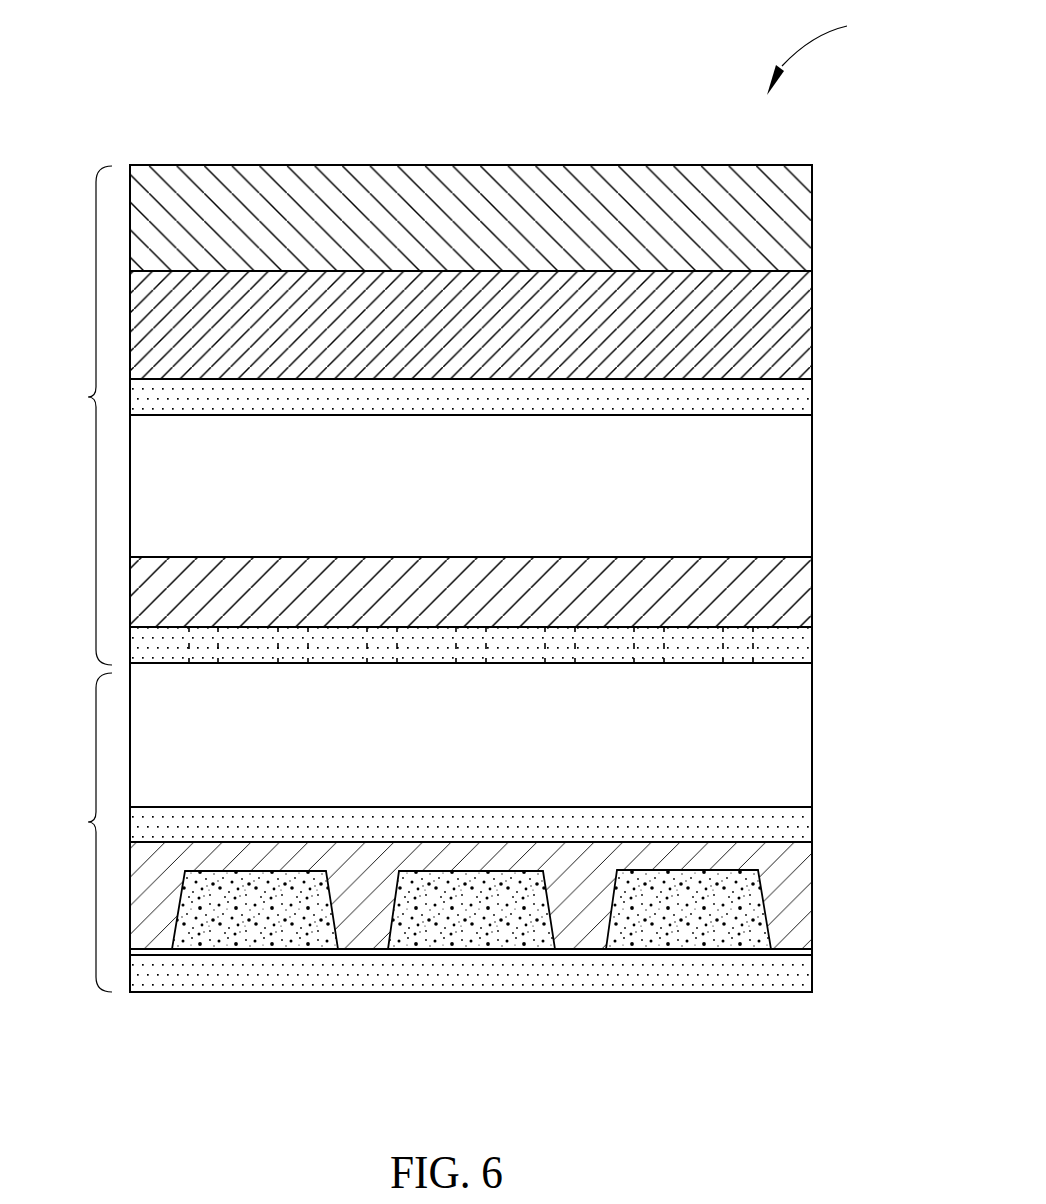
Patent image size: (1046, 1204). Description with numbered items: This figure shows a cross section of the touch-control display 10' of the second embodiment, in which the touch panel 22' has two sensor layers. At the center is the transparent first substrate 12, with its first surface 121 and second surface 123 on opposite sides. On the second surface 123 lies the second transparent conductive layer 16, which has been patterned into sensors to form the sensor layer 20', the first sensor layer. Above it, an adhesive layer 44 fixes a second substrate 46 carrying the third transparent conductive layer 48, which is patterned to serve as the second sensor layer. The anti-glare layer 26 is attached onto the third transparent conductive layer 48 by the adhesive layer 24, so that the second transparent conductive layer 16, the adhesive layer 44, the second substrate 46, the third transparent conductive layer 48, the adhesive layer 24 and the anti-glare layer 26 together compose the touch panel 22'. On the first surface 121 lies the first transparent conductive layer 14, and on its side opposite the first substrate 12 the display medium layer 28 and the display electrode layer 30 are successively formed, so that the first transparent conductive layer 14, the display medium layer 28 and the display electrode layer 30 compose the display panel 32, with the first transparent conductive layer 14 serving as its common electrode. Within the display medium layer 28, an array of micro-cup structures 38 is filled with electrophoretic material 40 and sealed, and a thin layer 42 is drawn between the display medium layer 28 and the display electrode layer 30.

The touch-control display 10' is at (828, 51).
The first substrate 12 is at (798, 733).
The first surface 121 is at (793, 807).
The second surface 123 is at (793, 664).
The first transparent conductive layer 14 is at (798, 823).
The second transparent conductive layer 16 is at (798, 647).
The sensor layer 20' is at (506, 620).
The touch panel 22' is at (72, 415).
The adhesive layer 24 is at (798, 325).
The anti-glare layer 26 is at (798, 218).
The display medium layer 28 is at (798, 893).
The display electrode layer 30 is at (799, 975).
The display panel 32 is at (87, 825).
The micro-cup structures 38 is at (482, 928).
The electrophoretic material 40 is at (218, 930).
The thin layer 42 is at (800, 952).
The adhesive layer 44 is at (797, 573).
The second substrate 46 is at (798, 485).
The third transparent conductive layer 48 is at (798, 400).